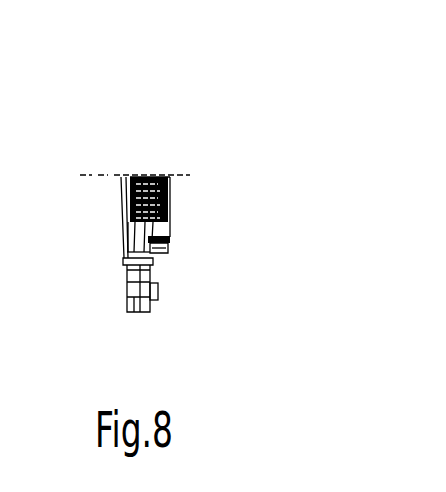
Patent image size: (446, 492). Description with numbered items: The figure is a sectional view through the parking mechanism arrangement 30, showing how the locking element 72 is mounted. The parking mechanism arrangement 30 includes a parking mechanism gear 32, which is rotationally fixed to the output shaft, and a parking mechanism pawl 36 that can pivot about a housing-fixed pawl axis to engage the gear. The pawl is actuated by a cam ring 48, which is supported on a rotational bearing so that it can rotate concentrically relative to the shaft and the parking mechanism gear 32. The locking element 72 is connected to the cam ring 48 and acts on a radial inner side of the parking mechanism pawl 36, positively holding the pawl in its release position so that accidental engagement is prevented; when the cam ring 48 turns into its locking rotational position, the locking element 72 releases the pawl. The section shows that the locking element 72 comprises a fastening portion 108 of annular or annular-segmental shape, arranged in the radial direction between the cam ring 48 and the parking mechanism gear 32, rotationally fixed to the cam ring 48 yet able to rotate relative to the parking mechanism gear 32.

The parking mechanism arrangement 30 is at (175, 128).
The parking mechanism gear 32 is at (126, 249).
The parking mechanism pawl 36 is at (137, 312).
The cam ring 48 is at (160, 249).
The locking element 72 is at (163, 294).
The fastening portion 108 is at (157, 270).